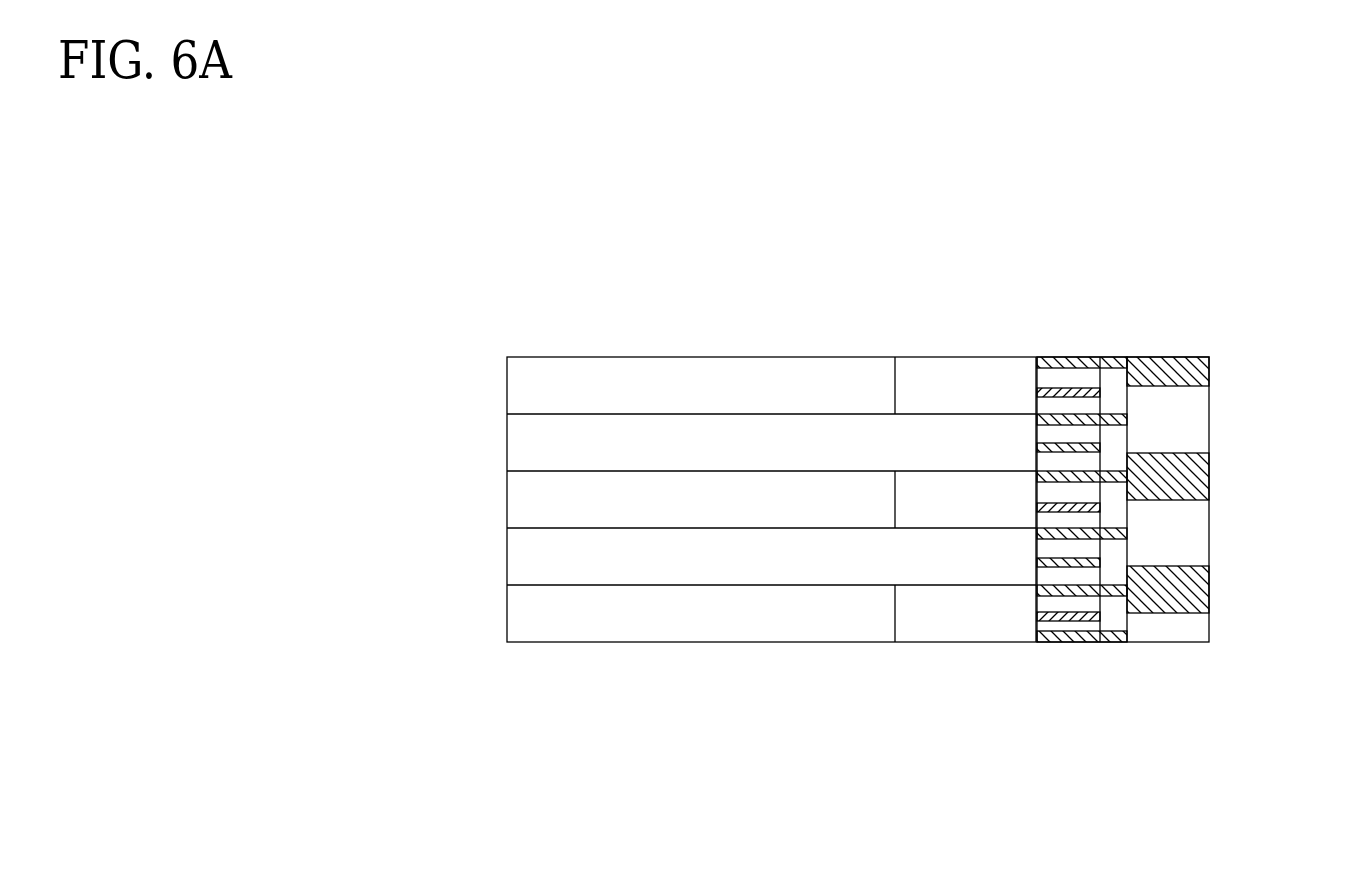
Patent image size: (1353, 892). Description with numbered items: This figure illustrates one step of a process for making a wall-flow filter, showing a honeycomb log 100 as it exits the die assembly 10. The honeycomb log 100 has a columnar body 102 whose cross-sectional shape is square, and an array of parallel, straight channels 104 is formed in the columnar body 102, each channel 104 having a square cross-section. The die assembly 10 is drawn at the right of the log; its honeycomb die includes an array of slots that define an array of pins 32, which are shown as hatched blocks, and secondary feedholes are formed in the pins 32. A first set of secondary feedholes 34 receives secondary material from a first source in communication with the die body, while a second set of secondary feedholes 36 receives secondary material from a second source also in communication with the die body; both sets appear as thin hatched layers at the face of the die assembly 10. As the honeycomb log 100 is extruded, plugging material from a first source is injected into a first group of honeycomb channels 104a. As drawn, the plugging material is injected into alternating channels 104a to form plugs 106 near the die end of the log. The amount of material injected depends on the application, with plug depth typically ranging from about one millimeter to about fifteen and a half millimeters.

The honeycomb log 100 is at (438, 262).
The columnar body 102 is at (582, 643).
The channels 104 is at (525, 568).
The first group of honeycomb channels 104a is at (750, 385).
The plugs 106 is at (917, 615).
The die assembly 10 is at (1210, 417).
The first set of secondary feedholes 34 is at (1037, 392).
The second set of secondary feedholes 36 is at (1036, 568).
The pins 32 is at (1210, 588).